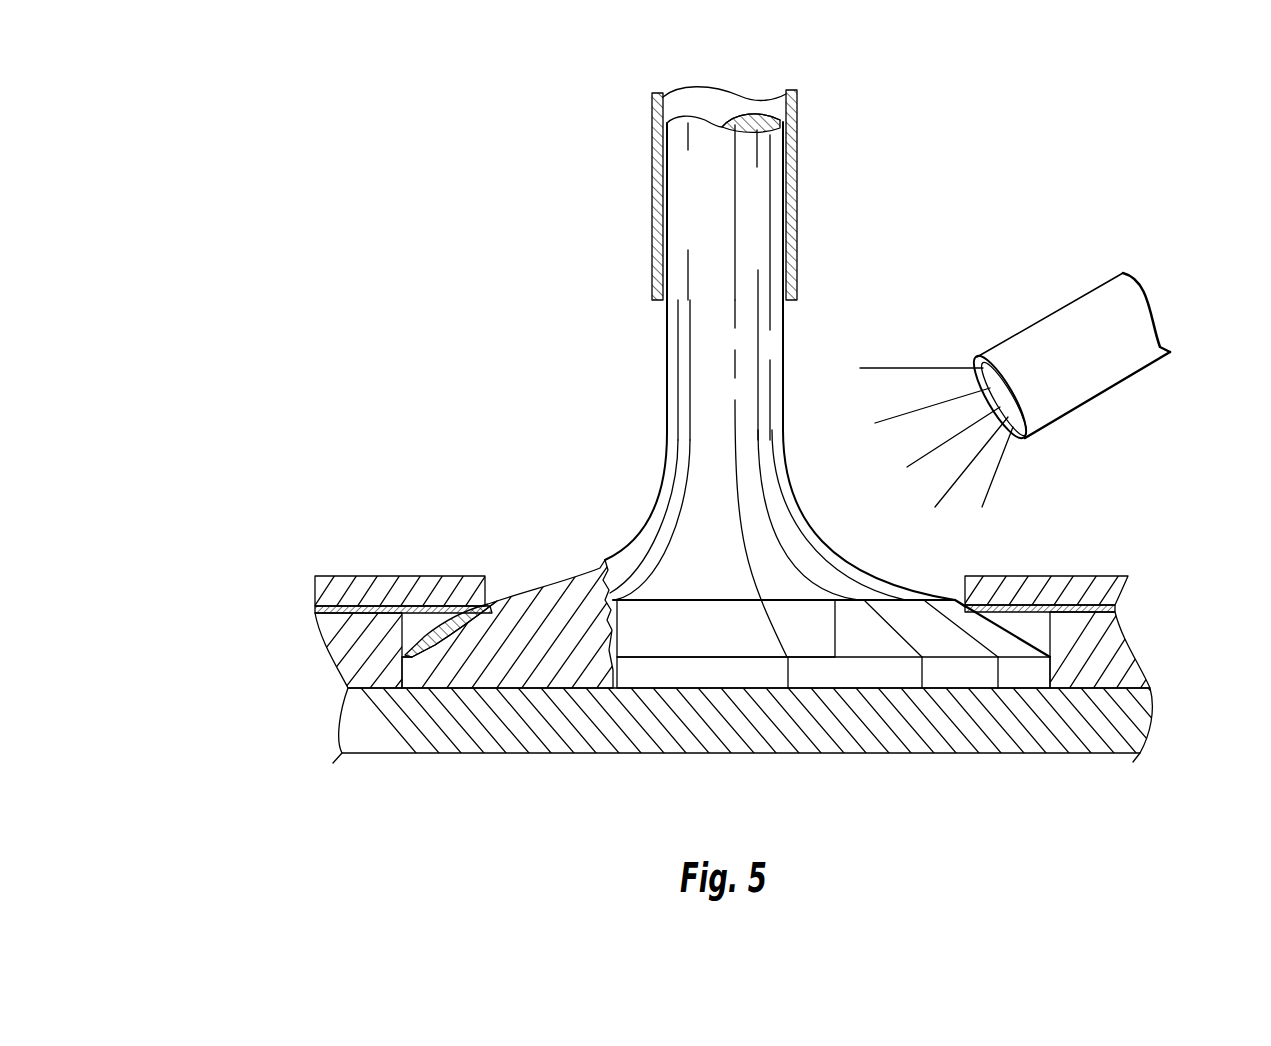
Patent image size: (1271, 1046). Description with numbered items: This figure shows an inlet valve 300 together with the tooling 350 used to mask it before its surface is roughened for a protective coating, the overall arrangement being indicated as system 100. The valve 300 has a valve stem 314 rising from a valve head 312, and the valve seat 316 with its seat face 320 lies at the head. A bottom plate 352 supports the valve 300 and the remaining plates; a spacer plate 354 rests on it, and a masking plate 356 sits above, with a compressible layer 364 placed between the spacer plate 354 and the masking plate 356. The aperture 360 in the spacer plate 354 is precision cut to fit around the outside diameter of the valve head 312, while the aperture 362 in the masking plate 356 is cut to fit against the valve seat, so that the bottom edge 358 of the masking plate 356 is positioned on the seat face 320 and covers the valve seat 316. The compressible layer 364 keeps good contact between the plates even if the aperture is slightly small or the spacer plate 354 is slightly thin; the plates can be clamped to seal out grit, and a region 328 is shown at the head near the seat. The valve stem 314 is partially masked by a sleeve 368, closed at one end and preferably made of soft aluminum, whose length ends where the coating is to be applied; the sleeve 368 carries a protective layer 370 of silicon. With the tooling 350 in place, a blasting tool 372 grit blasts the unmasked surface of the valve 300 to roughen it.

The valve repair system 100 is at (950, 180).
The inlet valve 300 is at (637, 445).
The valve head 312 is at (738, 690).
The valve stem 314 is at (787, 357).
The valve seat 316 is at (683, 633).
The seat face 320 is at (837, 625).
The coating layer 328 is at (432, 652).
The tooling 350 is at (303, 660).
The bottom plate 352 is at (1135, 715).
The spacer plate 354 is at (1112, 648).
The masking plate 356 is at (1125, 578).
The bottom edge 358 is at (972, 600).
The aperture 360 is at (410, 620).
The aperture 362 is at (495, 575).
The compressible layer 364 is at (1110, 607).
The sleeve 368 is at (665, 242).
The layer 370 is at (655, 185).
The blasting tool 372 is at (1055, 310).